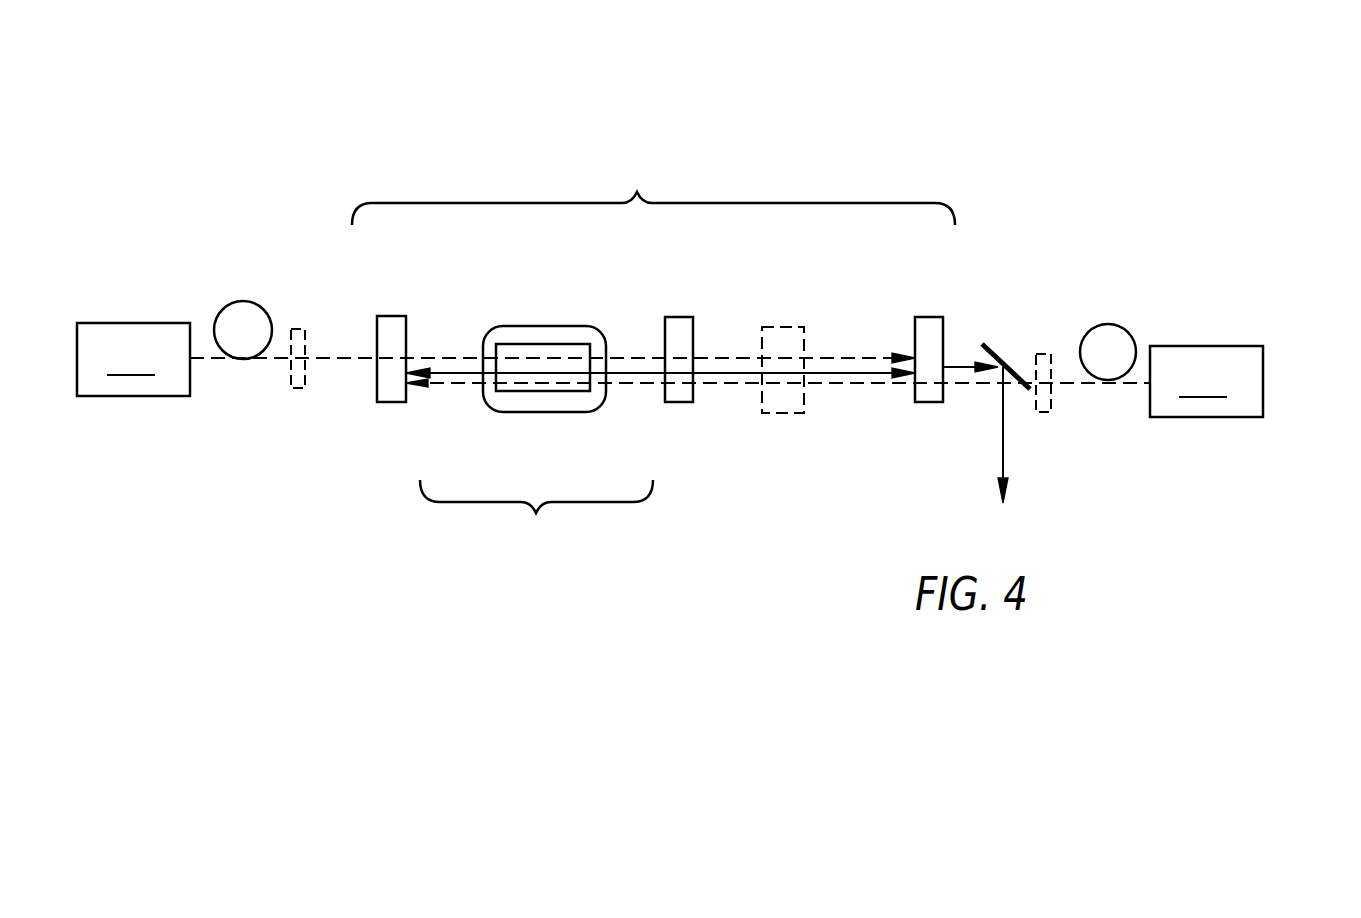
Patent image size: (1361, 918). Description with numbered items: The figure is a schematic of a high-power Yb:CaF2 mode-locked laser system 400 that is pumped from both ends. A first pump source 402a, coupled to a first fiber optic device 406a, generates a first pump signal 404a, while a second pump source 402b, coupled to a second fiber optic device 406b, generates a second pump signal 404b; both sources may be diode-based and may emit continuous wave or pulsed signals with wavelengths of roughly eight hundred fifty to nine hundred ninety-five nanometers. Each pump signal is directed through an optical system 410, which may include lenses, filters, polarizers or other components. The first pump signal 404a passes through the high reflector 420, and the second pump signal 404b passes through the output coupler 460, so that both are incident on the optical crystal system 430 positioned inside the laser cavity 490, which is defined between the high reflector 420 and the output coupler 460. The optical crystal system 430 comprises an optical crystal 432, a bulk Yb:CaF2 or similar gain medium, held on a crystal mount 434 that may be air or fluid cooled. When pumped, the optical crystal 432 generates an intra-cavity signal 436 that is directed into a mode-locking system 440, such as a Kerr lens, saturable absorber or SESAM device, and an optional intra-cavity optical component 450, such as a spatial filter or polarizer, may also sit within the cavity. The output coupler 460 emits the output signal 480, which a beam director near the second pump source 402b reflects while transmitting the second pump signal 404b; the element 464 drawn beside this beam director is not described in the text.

The laser system 400 is at (1170, 150).
The first pump source 402a is at (133, 359).
The second pump source 402b is at (1206, 381).
The first pump signal 404a is at (278, 362).
The second pump signal 404b is at (1068, 382).
The first fiber optic device 406a is at (233, 302).
The second fiber optic device 406b is at (1105, 324).
The optical system 410 is at (297, 388).
The high reflector 420 is at (390, 325).
The optical crystal system 430 is at (536, 436).
The optical crystal 432 is at (530, 392).
The crystal mount 434 is at (563, 412).
The intra-cavity signal 436 is at (731, 374).
The mode-locking system 440 is at (680, 317).
The intra-cavity optical component 450 is at (782, 327).
The output coupler 460 is at (930, 317).
The beam splitter 464 is at (1022, 385).
The output signal 480 is at (1003, 447).
The laser cavity 490 is at (653, 194).